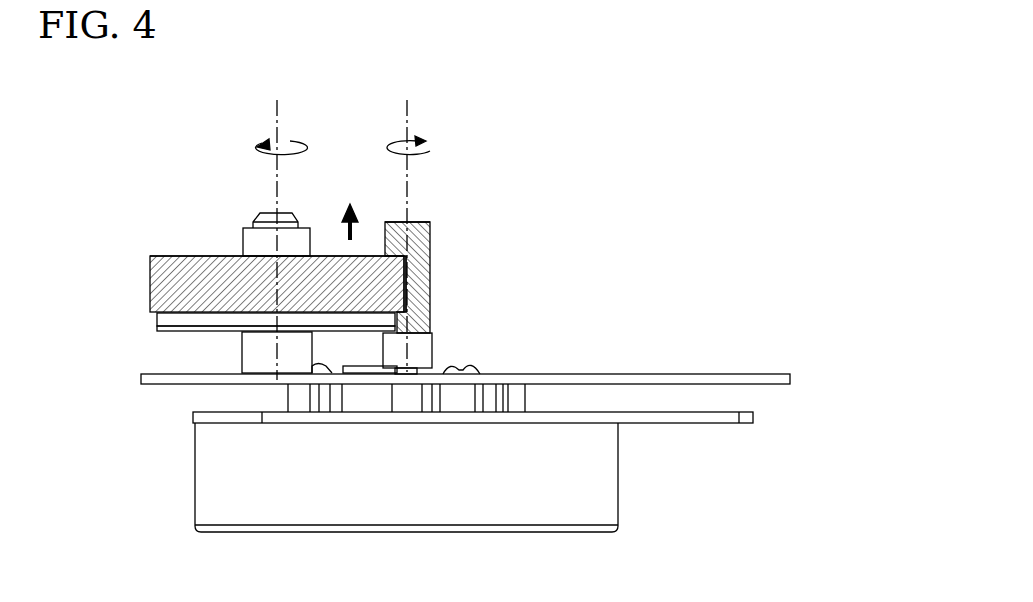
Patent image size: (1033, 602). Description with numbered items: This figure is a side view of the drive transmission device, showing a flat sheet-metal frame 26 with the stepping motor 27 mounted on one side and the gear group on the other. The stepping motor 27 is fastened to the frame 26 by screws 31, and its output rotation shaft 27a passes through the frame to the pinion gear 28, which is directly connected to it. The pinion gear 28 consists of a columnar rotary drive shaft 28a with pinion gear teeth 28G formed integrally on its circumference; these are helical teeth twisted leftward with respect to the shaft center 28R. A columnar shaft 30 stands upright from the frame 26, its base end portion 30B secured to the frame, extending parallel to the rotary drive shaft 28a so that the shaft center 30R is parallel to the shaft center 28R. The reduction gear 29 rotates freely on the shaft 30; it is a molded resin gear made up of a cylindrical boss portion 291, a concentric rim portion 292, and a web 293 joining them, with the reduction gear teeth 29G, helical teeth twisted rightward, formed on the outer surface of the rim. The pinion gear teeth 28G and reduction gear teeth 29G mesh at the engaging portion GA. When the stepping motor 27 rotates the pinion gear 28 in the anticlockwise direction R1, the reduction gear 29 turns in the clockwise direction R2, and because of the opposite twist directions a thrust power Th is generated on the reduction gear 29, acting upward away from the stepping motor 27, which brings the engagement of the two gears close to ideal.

The shaft center 30R is at (283, 105).
The shaft center 28R is at (413, 105).
The clockwise direction R2 is at (262, 152).
The anticlockwise direction R1 is at (430, 152).
The shaft 30 is at (292, 212).
The boss portion 291 is at (243, 242).
The reduction gear 29 is at (146, 267).
The reduction gear teeth 29G is at (167, 300).
The rim portion 292 is at (165, 318).
The web 293 is at (197, 333).
The thrust power Th is at (360, 233).
The pinion gear 28 is at (440, 237).
The rotary drive shaft 28a is at (413, 222).
The engaging portion GA is at (414, 276).
The pinion gear teeth 28G is at (420, 300).
The output rotation shaft 27a is at (425, 352).
The screws 31 is at (318, 366).
The frame 26 is at (697, 374).
The base end portion 30B is at (290, 390).
The stepping motor 27 is at (430, 508).